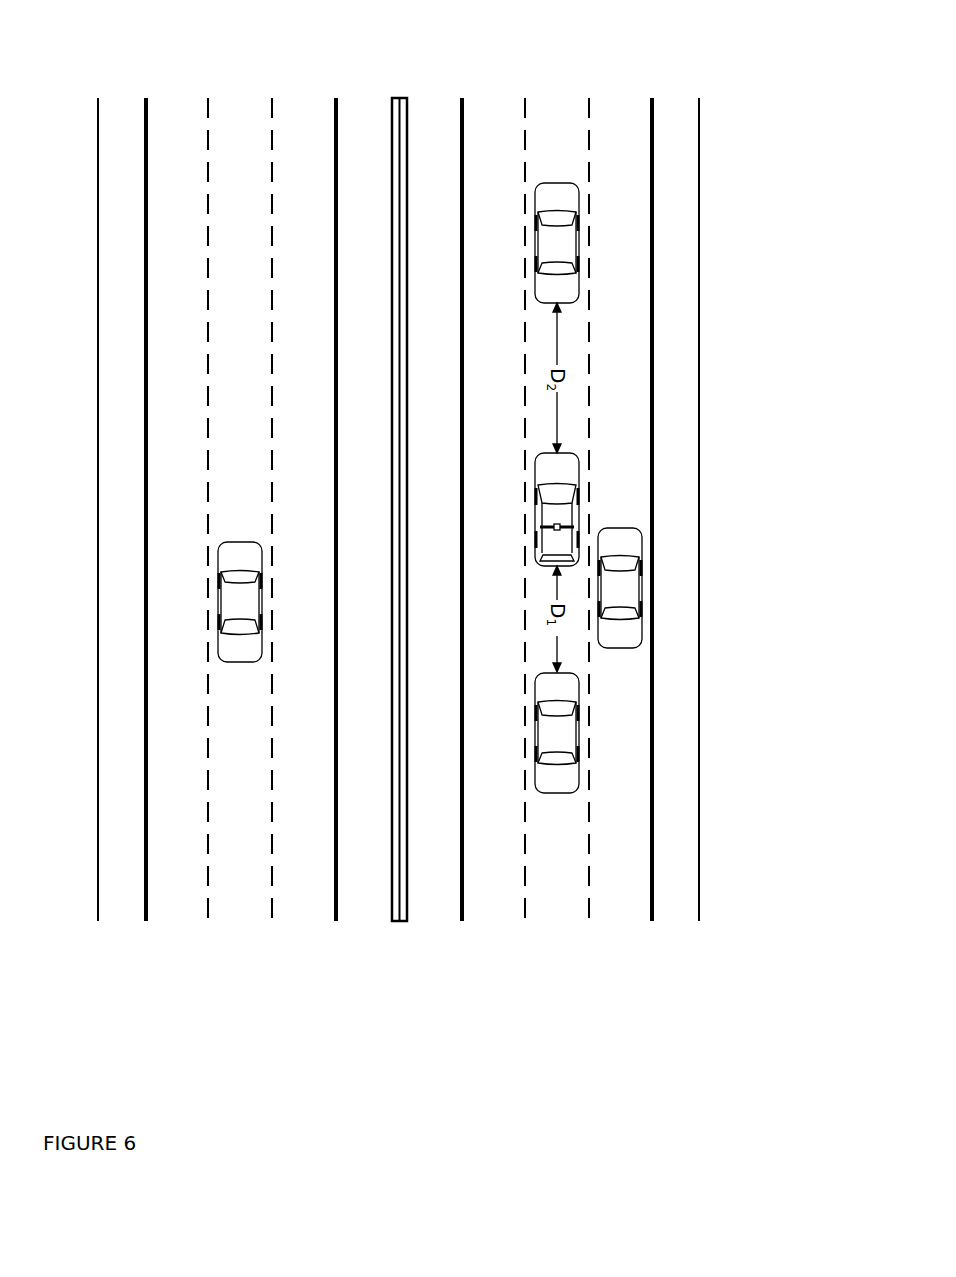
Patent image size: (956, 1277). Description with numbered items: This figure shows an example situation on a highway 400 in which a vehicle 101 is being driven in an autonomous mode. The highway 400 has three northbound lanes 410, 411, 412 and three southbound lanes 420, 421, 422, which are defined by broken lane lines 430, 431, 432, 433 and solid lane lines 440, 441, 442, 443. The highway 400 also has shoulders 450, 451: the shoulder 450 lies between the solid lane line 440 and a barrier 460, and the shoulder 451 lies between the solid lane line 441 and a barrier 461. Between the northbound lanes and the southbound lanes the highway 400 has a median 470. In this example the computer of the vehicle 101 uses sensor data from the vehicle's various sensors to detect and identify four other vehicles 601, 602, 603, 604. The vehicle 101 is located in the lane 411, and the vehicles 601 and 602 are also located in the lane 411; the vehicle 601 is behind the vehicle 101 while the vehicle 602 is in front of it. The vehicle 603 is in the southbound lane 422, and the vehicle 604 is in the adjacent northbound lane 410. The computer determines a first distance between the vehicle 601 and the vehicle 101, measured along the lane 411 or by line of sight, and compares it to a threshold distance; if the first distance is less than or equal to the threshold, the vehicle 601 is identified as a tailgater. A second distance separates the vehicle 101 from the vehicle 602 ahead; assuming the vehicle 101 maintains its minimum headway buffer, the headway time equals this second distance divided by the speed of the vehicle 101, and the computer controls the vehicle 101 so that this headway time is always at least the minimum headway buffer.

The highway 400 is at (118, 1093).
The vehicle 101 is at (579, 512).
The vehicle 601 is at (579, 735).
The vehicle 602 is at (579, 245).
The vehicle 603 is at (218, 606).
The vehicle 604 is at (642, 590).
The northbound lane 410 is at (620, 98).
The northbound lane 411 is at (557, 98).
The northbound lane 412 is at (493, 98).
The southbound lane 420 is at (304, 98).
The southbound lane 421 is at (240, 98).
The southbound lane 422 is at (177, 98).
The shoulder 450 is at (675, 98).
The shoulder 451 is at (122, 98).
The median 470 is at (398, 98).
The broken lane line 430 is at (589, 921).
The broken lane line 431 is at (525, 921).
The broken lane line 432 is at (272, 921).
The broken lane line 433 is at (208, 921).
The solid lane line 440 is at (652, 921).
The solid lane line 441 is at (462, 921).
The solid lane line 442 is at (336, 921).
The solid lane line 443 is at (146, 921).
The barrier 460 is at (699, 921).
The barrier 461 is at (98, 921).